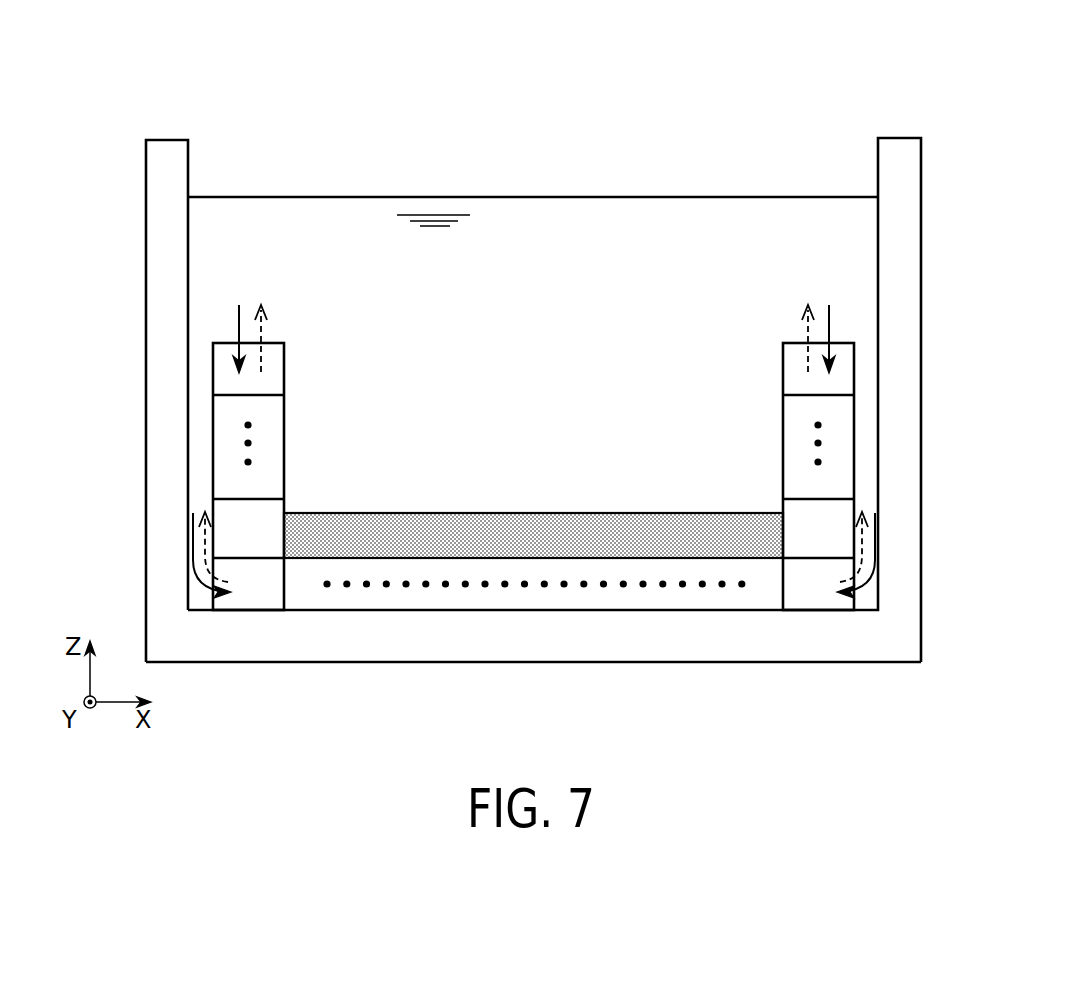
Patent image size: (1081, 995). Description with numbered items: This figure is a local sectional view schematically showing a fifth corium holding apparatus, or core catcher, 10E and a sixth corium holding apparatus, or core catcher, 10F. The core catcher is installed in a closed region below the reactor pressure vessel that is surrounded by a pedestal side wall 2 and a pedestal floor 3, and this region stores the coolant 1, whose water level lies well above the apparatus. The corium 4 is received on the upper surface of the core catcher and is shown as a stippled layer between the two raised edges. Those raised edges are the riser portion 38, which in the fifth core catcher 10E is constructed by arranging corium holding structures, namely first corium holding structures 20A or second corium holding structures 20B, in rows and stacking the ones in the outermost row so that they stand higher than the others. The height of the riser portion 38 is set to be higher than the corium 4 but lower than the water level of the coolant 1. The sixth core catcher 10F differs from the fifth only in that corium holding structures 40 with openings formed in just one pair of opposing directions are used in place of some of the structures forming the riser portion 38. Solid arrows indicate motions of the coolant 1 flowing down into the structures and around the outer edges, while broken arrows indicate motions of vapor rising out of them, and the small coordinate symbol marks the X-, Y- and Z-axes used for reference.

The fifth corium holding apparatus 10E is at (323, 262).
The sixth corium holding apparatus 10F is at (574, 423).
The coolant 1 is at (670, 231).
The pedestal side wall 2 is at (146, 215).
The pedestal floor 3 is at (681, 648).
The corium 4 is at (593, 520).
The first corium holding structure 20A is at (262, 600).
The second corium holding structure 20B is at (843, 370).
The corium holding structure with openings in one pair of opposing directions 40 is at (848, 457).
The riser portion 38 is at (774, 392).